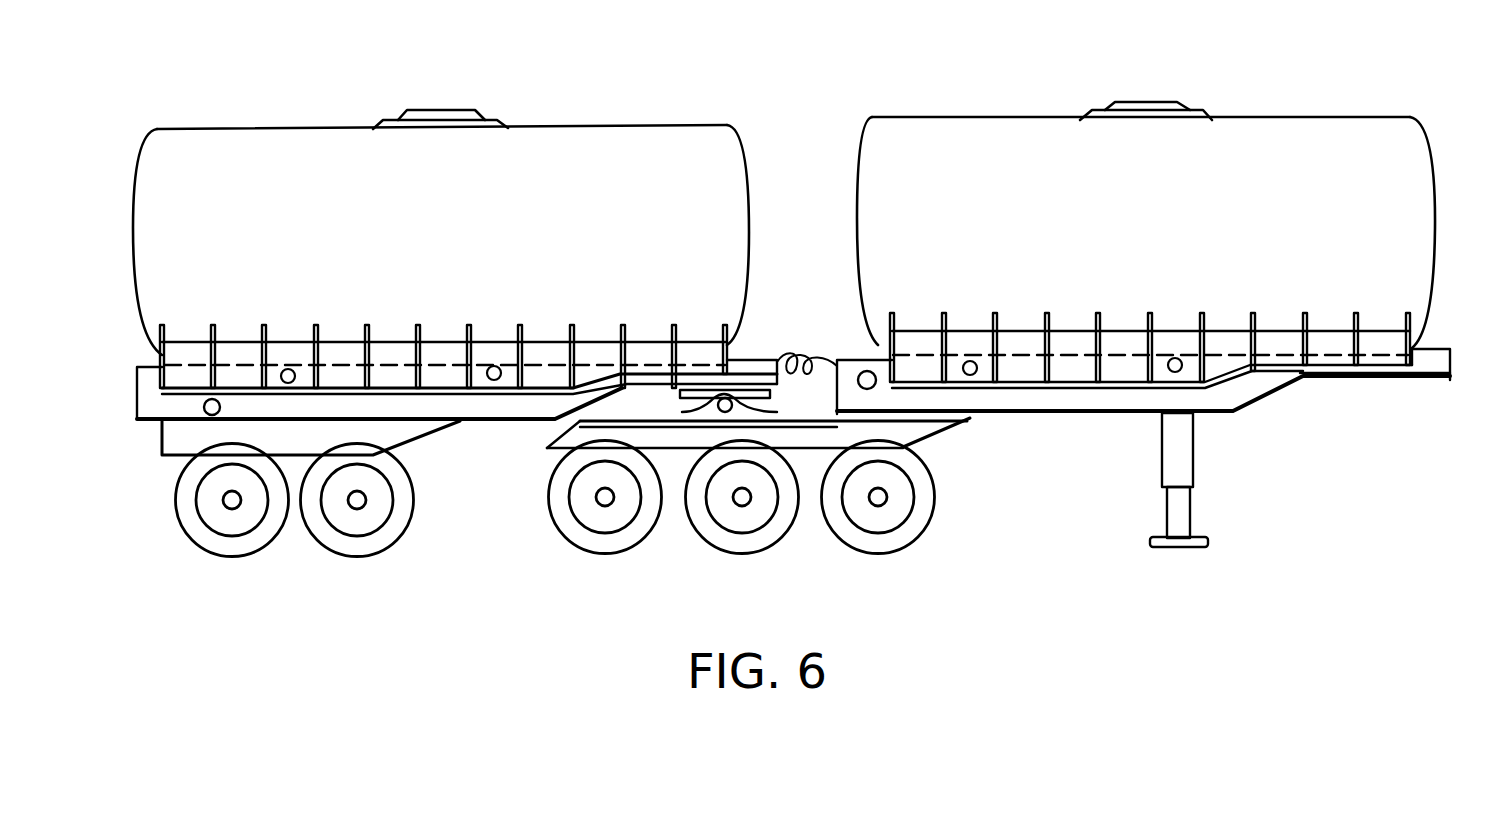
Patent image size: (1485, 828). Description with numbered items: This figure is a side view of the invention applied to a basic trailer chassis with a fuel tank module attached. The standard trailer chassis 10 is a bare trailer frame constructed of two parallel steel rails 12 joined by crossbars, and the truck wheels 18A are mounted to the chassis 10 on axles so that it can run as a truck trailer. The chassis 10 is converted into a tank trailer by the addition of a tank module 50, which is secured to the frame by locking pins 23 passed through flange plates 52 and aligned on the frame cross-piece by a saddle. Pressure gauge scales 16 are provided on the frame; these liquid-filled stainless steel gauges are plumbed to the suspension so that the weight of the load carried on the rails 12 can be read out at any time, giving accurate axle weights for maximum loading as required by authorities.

The frame 10 is at (1241, 416).
The T-1 steel rails 12 is at (413, 410).
The pressure gauge scales 16 is at (229, 401).
The truck wheels 18A is at (406, 529).
The locking pins 23 is at (288, 369).
The tank module 50 is at (652, 150).
The flange plates 52 is at (532, 376).